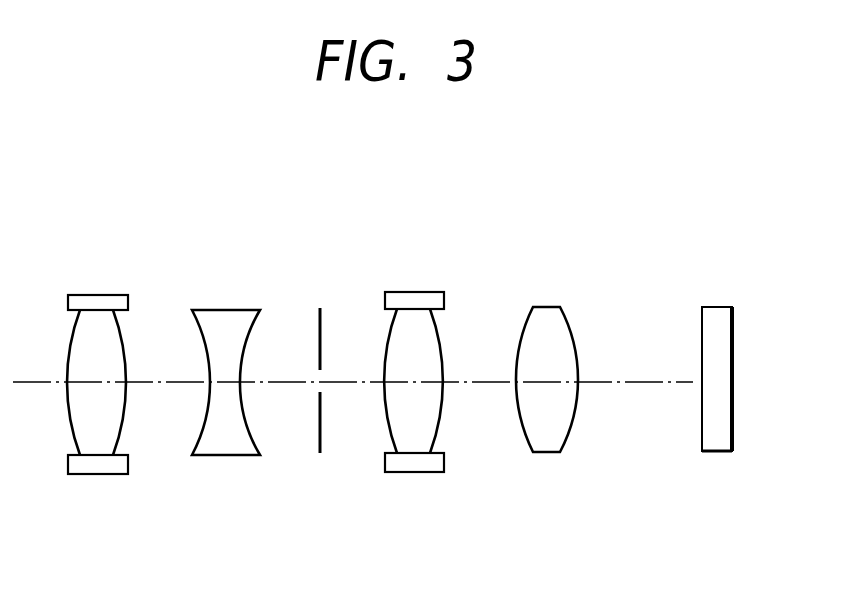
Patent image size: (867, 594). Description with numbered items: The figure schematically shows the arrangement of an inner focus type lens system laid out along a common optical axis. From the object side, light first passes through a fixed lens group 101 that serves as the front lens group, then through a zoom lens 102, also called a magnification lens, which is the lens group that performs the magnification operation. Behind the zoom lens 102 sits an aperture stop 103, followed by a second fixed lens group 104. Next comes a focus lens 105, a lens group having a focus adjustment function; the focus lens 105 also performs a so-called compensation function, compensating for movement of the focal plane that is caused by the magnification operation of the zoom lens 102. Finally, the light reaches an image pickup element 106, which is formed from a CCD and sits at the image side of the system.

The fixed lens group 101 is at (103, 295).
The zoom lens 102 is at (205, 310).
The aperture stop 103 is at (323, 455).
The fixed lens group 104 is at (408, 292).
The focus lens 105 is at (547, 307).
The image pickup element 106 is at (715, 307).